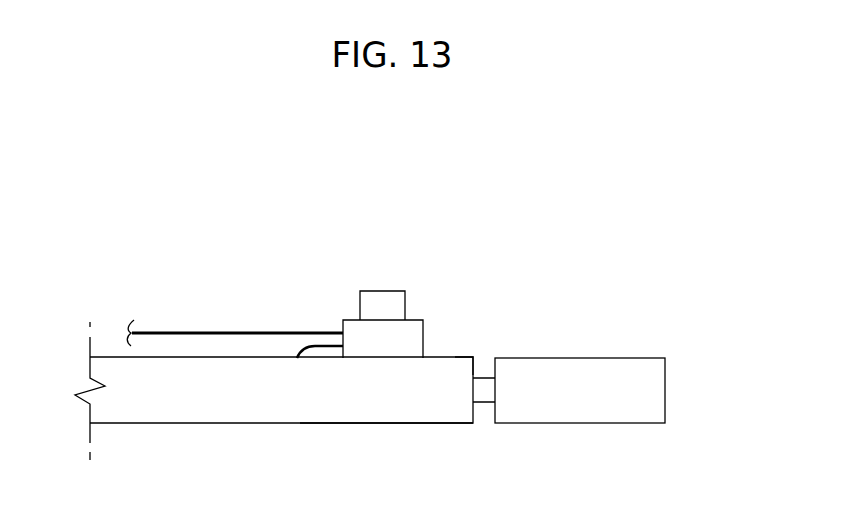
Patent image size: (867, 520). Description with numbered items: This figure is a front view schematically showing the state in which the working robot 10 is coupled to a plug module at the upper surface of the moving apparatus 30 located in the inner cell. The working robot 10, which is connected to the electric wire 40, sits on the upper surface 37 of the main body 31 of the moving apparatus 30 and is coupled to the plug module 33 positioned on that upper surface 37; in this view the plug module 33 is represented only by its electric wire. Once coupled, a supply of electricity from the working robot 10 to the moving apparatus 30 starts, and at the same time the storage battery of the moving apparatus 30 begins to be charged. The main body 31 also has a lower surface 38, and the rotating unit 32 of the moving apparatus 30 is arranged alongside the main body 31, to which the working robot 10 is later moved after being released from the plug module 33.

The working robot 10 is at (400, 285).
The moving apparatus 30 is at (580, 318).
The main body 31 is at (461, 357).
The rotating unit 32 is at (587, 375).
The plug module 33 is at (321, 352).
The upper surface 37 is at (458, 370).
The lower surface 38 is at (403, 423).
The electric wire 40 is at (183, 332).